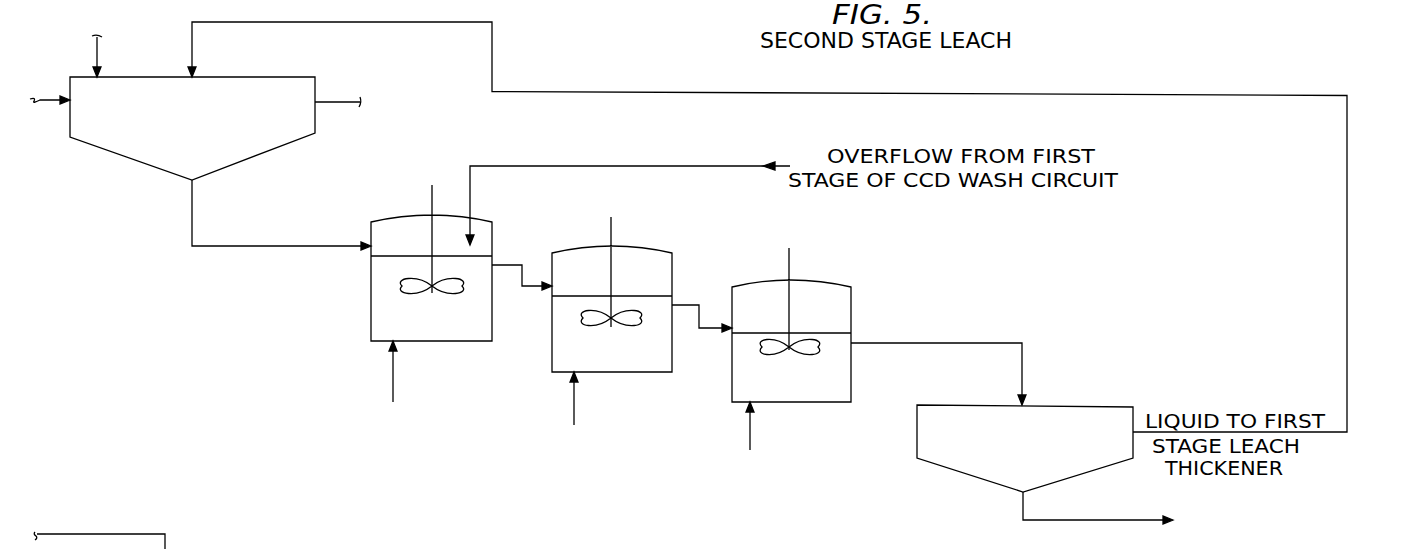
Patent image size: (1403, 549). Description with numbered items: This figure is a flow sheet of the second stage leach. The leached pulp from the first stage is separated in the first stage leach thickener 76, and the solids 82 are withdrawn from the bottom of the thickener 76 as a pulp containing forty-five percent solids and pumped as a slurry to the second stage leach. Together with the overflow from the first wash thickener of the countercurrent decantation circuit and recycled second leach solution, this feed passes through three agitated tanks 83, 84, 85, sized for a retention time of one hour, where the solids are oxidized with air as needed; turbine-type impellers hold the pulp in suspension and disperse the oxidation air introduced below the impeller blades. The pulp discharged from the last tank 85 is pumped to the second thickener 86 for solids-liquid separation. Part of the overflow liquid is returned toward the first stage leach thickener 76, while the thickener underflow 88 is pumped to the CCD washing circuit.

The thickener 76 is at (125, 160).
The solids 82 is at (182, 216).
The tank 83 is at (493, 247).
The tank 84 is at (672, 273).
The tank 85 is at (851, 305).
The second thickener 86 is at (1097, 407).
The underflow to CCD wash 88 is at (1107, 520).